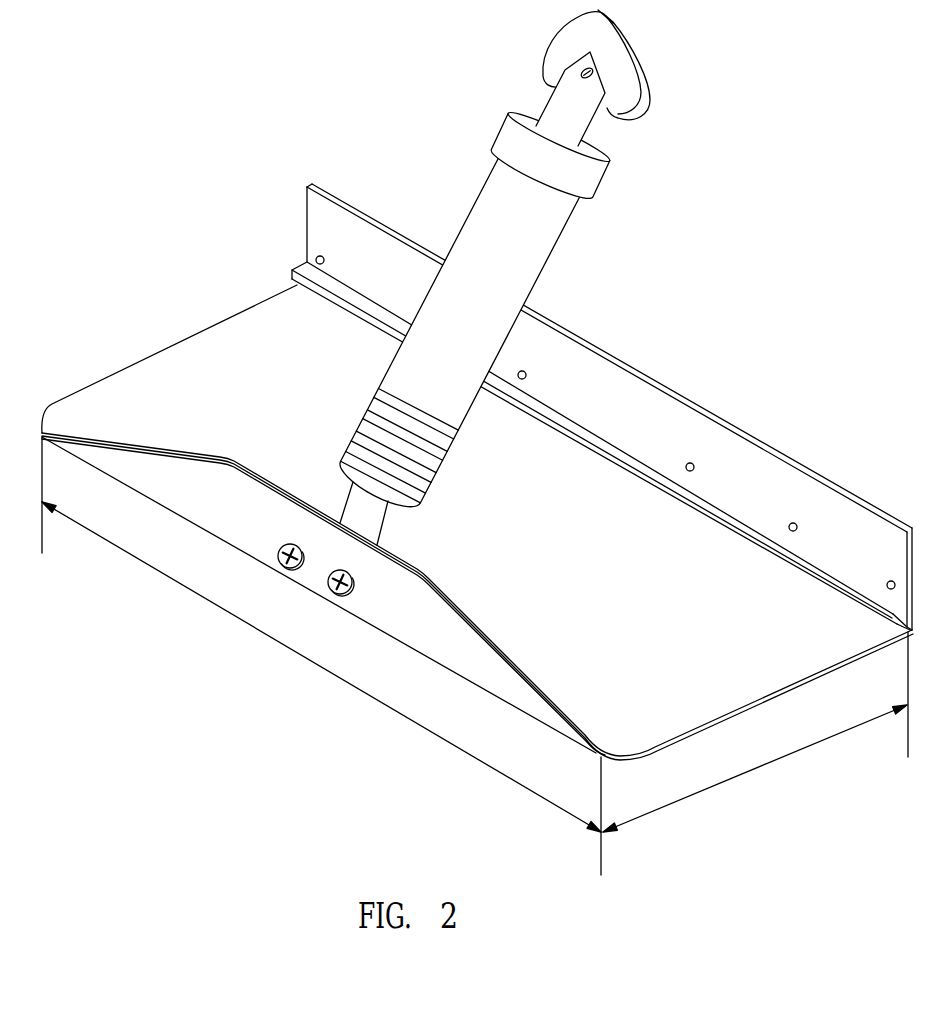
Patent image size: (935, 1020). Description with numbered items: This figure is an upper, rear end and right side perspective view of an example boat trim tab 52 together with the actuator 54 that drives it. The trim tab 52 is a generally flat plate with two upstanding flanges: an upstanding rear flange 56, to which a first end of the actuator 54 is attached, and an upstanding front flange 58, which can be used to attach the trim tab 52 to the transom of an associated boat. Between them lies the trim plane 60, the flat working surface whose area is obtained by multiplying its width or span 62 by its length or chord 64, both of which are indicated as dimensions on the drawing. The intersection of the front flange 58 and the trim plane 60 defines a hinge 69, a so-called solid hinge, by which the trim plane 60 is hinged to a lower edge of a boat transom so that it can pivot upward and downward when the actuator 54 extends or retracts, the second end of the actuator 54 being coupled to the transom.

The trim tab 52 is at (625, 497).
The actuator 54 is at (478, 205).
The upstanding rear flange 56 is at (150, 467).
The upstanding front flange 58 is at (624, 390).
The trim plane 60 is at (242, 338).
The span 62 is at (350, 690).
The chord 64 is at (743, 773).
The hinge 69 is at (810, 563).